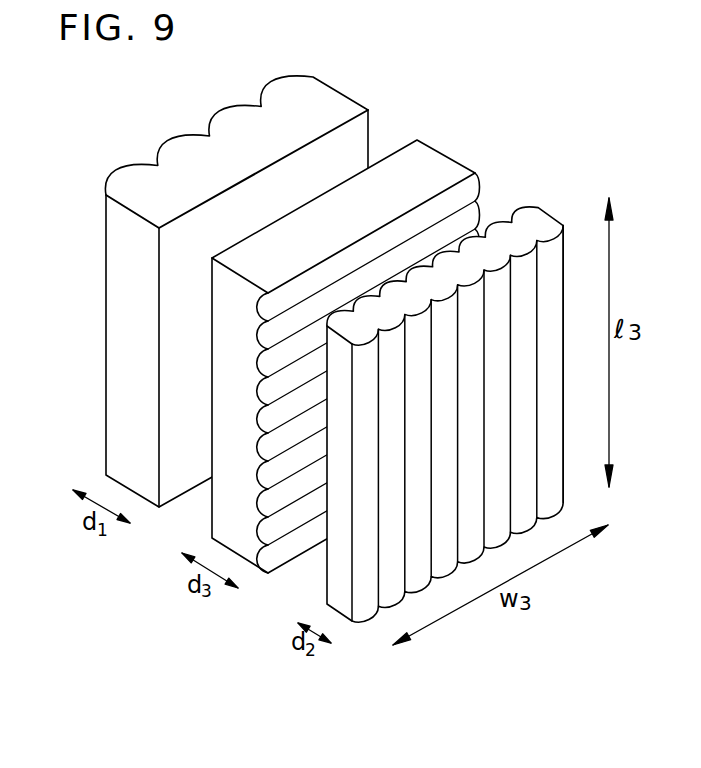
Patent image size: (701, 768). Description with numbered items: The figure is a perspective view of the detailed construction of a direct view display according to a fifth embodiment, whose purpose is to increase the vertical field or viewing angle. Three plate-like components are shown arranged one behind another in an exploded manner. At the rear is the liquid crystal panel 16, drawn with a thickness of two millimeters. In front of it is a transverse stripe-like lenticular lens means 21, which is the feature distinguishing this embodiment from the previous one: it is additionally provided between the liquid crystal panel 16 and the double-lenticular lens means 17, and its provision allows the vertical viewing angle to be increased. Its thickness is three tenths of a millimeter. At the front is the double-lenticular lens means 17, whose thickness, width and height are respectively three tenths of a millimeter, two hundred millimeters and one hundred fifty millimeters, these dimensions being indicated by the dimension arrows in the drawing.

The liquid crystal panel 16 is at (333, 107).
The transverse stripe-like lenticular lens means 21 is at (445, 168).
The double-lenticular lens means 17 is at (535, 223).